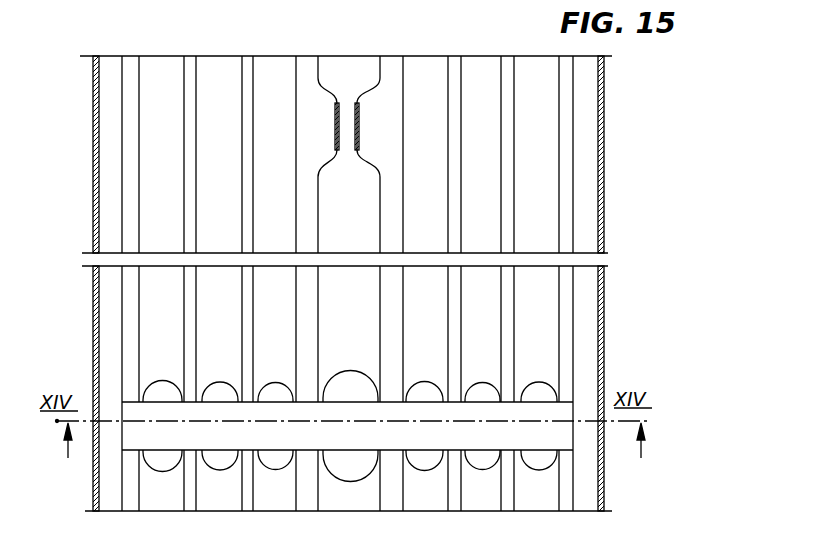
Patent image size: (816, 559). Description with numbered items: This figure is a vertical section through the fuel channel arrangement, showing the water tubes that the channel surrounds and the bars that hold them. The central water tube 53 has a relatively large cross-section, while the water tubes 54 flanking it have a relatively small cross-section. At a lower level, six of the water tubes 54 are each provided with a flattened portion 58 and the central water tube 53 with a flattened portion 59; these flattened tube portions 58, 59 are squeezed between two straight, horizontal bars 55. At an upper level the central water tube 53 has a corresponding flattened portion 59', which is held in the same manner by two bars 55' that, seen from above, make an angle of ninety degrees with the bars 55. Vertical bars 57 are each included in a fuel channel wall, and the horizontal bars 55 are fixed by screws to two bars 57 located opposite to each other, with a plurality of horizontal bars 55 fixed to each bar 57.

The central water tube 53 is at (365, 65).
The water tubes 54 is at (488, 147).
The horizontal bars 55 is at (396, 443).
The bars 55' is at (313, 84).
The vertical bars 57 is at (590, 212).
The flattened portion 58 is at (488, 388).
The flattened portion 59 is at (489, 377).
The flattened portion 59' is at (402, 138).